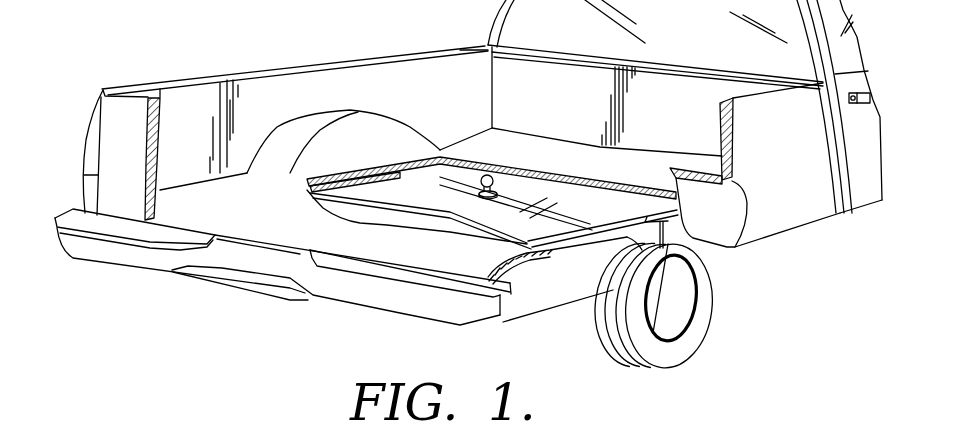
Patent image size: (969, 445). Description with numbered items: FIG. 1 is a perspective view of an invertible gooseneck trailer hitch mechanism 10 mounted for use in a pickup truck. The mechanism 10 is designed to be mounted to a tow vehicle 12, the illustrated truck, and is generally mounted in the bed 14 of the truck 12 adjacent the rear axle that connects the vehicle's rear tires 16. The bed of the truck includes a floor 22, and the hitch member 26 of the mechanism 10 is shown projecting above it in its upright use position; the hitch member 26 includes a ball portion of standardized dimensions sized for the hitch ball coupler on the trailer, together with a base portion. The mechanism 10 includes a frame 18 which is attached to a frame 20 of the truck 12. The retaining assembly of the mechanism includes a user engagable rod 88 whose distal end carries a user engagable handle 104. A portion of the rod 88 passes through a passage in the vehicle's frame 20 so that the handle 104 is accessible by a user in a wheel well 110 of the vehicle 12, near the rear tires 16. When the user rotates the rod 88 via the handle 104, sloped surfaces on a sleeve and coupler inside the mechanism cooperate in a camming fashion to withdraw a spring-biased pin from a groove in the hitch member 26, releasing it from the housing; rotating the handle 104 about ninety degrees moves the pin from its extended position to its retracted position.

The invertible gooseneck trailer hitch mechanism 10 is at (533, 197).
The tow vehicle 12 is at (793, 217).
The bed 14 is at (372, 75).
The rear tires 16 is at (708, 307).
The frame 18 is at (400, 177).
The frame of the truck 20 is at (585, 247).
The floor 22 is at (647, 162).
The hitch member 26 is at (482, 173).
The user engagable rod 88 is at (677, 215).
The user engagable handle 104 is at (670, 367).
The wheel well 110 is at (745, 222).